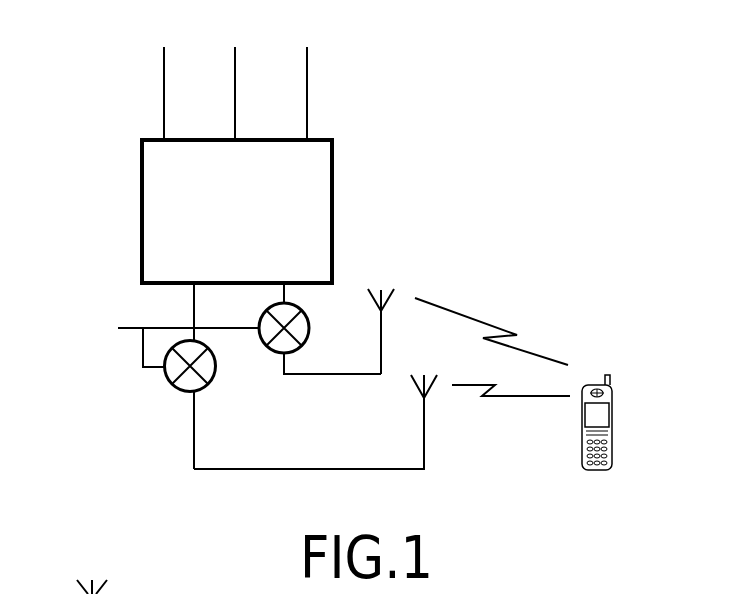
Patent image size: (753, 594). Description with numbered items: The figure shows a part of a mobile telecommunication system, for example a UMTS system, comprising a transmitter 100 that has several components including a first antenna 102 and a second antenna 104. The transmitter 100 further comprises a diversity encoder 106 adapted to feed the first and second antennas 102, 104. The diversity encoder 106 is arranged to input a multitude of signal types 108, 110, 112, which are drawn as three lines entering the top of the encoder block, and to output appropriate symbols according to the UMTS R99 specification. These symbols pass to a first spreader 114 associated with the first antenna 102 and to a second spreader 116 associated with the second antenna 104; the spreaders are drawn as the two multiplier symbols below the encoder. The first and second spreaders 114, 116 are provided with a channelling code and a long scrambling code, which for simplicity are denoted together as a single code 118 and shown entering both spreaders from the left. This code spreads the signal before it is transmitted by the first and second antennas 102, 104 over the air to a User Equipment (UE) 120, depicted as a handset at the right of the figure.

The transmitter 100 is at (418, 213).
The first antenna 102 is at (381, 337).
The second antenna 104 is at (424, 440).
The diversity encoder 106 is at (333, 160).
The signal type 108 is at (164, 68).
The signal type 110 is at (235, 57).
The signal type 112 is at (307, 68).
The first spreader 114 is at (290, 355).
The second spreader 116 is at (199, 390).
The code 118 is at (128, 326).
The User Equipment (UE) 120 is at (600, 412).